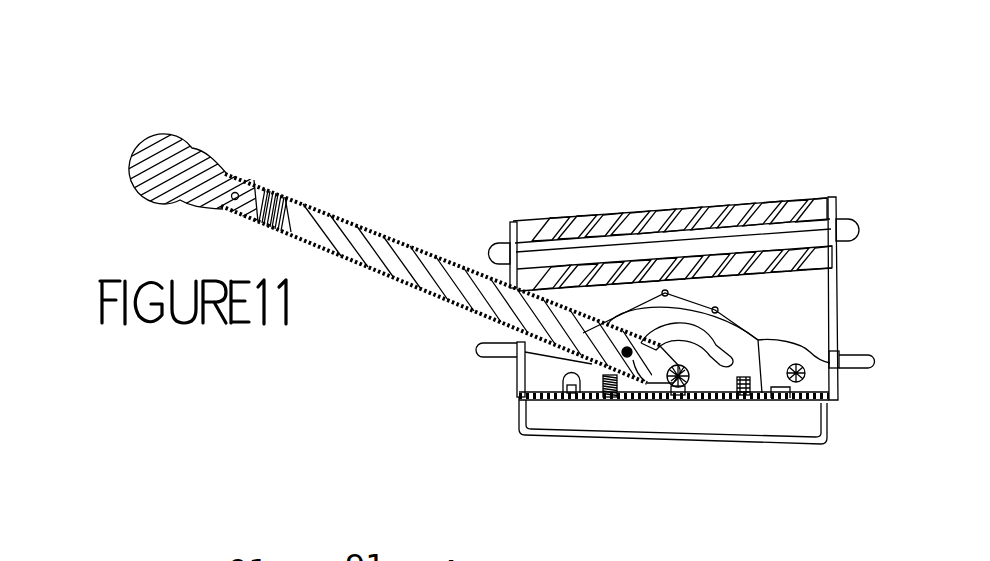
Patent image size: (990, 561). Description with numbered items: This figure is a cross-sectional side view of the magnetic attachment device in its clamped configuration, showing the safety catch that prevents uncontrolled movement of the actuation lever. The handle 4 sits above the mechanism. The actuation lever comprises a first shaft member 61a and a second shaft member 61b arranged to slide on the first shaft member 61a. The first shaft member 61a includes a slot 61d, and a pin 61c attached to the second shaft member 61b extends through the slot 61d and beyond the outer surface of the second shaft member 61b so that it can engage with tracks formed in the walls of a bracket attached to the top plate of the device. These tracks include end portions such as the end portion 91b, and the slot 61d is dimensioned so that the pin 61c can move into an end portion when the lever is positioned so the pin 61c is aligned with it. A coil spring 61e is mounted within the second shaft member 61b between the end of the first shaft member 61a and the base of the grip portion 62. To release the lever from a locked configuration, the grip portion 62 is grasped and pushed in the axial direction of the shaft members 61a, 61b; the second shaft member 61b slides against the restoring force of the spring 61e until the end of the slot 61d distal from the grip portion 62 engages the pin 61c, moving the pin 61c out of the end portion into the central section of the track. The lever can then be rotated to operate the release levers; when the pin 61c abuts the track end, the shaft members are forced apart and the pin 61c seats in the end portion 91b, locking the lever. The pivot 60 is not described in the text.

The grip portion 62 is at (186, 157).
The coil spring 61e is at (282, 197).
The second shaft member 61b is at (398, 242).
The first shaft member 61a is at (377, 256).
The pin 61c is at (623, 357).
The slot 61d is at (643, 360).
The pivot shaft 60 is at (678, 387).
The handle 4 is at (739, 189).
The end portion 91b is at (728, 356).